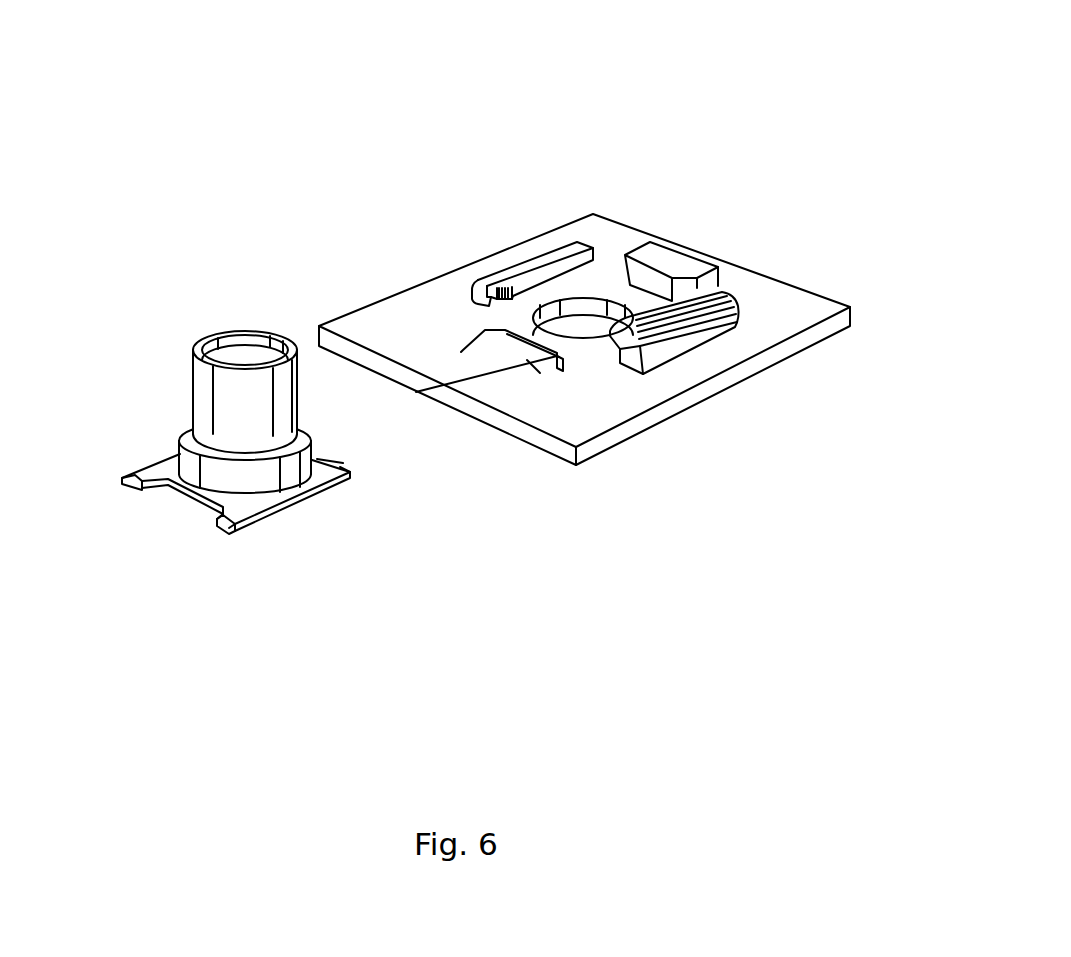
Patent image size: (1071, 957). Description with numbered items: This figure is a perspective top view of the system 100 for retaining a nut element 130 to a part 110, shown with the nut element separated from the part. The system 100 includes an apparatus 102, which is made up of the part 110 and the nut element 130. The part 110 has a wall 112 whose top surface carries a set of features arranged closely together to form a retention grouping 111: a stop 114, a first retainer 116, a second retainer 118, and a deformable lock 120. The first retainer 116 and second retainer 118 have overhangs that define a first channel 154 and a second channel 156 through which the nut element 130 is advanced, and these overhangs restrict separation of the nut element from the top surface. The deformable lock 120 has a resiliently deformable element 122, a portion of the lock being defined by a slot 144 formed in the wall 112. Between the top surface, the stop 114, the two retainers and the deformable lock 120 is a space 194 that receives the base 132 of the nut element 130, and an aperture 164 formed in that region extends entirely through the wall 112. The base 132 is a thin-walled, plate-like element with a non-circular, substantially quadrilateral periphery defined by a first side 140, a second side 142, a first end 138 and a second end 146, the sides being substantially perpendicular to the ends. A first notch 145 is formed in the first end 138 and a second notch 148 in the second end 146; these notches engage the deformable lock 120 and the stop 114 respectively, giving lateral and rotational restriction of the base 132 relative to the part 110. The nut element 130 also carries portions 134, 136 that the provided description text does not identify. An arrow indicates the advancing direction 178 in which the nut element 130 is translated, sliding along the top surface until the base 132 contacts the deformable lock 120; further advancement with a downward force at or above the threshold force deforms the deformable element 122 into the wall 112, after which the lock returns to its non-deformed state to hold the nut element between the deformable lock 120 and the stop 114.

The system 100 is at (650, 101).
The apparatus 102 is at (568, 210).
The part 110 is at (632, 207).
The retention grouping 111 is at (663, 218).
The wall 112 is at (807, 303).
The stop 114 is at (701, 263).
The first retainer 116 is at (541, 249).
The second retainer 118 is at (748, 313).
The deformable lock 120 is at (517, 393).
The deformable element 122 is at (532, 368).
The nut element 130 is at (225, 424).
The base 132 is at (149, 459).
The cylindrical body 134 is at (195, 416).
The bore 136 is at (215, 357).
The first end 138 is at (346, 469).
The first side 140 is at (225, 491).
The second side 142 is at (253, 521).
The slot 144 is at (577, 368).
The first notch 145 is at (170, 492).
The second end 146 is at (223, 527).
The second notch 148 is at (313, 463).
The first channel 154 is at (489, 306).
The second channel 156 is at (615, 352).
The aperture 164 is at (562, 308).
The advancing direction 178 is at (416, 392).
The space 194 is at (576, 320).